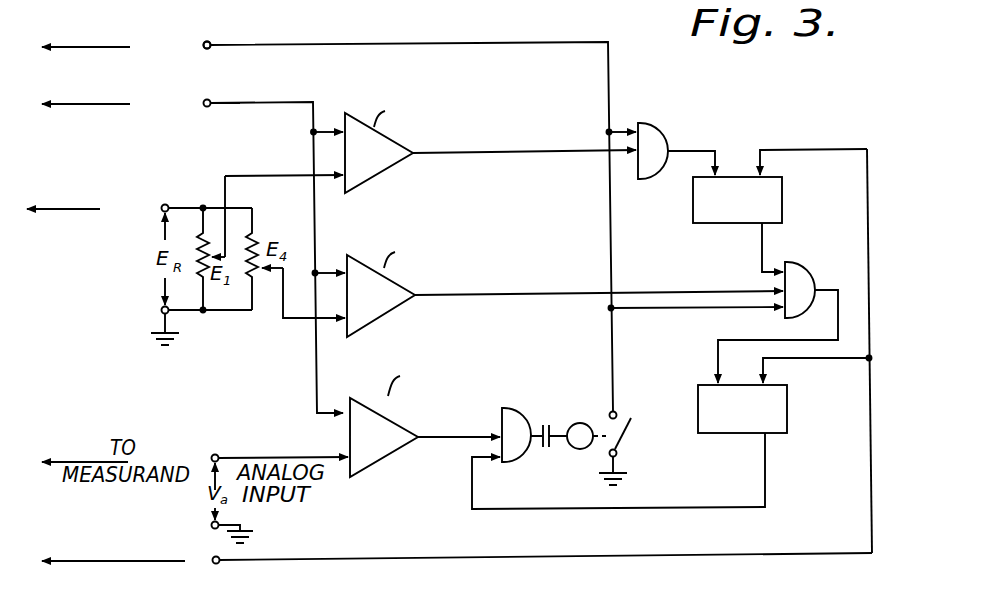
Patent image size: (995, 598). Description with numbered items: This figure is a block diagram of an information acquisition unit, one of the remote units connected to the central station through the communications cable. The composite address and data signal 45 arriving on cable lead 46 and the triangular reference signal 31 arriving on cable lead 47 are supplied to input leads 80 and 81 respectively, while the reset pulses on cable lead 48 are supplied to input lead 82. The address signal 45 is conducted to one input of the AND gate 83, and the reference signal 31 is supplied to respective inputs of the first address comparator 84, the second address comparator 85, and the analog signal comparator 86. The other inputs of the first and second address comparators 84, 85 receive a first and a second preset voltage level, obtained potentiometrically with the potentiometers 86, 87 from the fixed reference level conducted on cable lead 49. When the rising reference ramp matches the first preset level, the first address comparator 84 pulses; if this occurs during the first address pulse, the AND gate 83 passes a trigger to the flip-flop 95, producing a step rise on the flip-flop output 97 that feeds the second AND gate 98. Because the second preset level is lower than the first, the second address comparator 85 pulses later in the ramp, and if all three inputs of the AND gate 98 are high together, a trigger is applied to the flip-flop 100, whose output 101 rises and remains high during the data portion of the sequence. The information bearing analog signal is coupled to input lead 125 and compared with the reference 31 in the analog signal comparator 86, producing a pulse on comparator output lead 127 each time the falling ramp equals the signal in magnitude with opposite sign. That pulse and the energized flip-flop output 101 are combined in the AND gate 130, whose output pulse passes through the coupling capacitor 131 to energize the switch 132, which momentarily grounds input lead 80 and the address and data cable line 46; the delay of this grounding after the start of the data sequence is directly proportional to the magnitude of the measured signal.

The time varying reference signal 31 is at (274, 246).
The composite address and data signal 45 is at (409, 216).
The cable lead 46 is at (109, 48).
The cable lead 47 is at (109, 104).
The cable lead 48 is at (114, 561).
The cable lead 49 is at (89, 209).
The input lead 80 is at (226, 45).
The input lead 81 is at (222, 106).
The input lead 82 is at (352, 554).
The AND gate 83 is at (658, 138).
The first address comparator 84 is at (383, 175).
The second address comparator 85 is at (388, 315).
The analog signal comparator / potentiometer 86 is at (208, 284).
The potentiometer 87 is at (258, 286).
The flip-flop 95 is at (782, 196).
The flip-flop output 97 is at (758, 250).
The second AND gate 98 is at (808, 279).
The flip-flop 100 is at (787, 413).
The flip-flop output 101 is at (765, 470).
The input lead 125 is at (258, 458).
The comparator output lead 127 is at (460, 440).
The AND gate 130 is at (500, 418).
The coupling capacitor 131 is at (549, 450).
The switch 132 is at (578, 449).